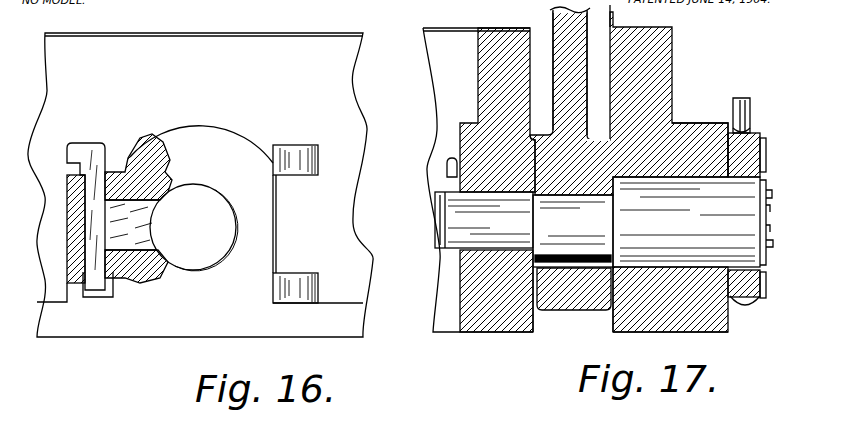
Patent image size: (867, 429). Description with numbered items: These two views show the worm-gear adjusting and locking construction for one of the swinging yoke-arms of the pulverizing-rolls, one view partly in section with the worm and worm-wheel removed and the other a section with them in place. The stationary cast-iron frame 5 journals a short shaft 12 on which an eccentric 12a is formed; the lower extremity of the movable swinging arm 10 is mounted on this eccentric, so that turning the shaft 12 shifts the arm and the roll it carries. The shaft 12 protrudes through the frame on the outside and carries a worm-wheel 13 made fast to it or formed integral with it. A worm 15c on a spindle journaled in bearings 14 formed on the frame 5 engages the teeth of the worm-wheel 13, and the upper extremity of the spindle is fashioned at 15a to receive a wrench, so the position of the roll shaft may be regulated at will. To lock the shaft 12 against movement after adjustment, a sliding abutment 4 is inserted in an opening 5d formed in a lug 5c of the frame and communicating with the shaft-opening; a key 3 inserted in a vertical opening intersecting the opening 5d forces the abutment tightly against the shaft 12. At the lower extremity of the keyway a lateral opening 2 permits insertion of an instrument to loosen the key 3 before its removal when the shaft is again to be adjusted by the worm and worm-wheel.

In FIG. 16, the lateral opening 2 is at (98, 297).
In FIG. 16, the key 3 is at (88, 143).
In FIG. 16, the sliding abutment 4 is at (142, 245).
In FIG. 16, the frame 5 is at (200, 185).
In FIG. 17, the frame 5 is at (672, 60).
In FIG. 16, the lug 5c is at (252, 240).
In FIG. 17, the lug 5c is at (703, 124).
In FIG. 16, the opening 5d is at (141, 140).
In FIG. 17, the swinging arm 10 is at (566, 312).
In FIG. 16, the short shaft 12 is at (194, 227).
In FIG. 17, the short shaft 12 is at (597, 222).
In FIG. 17, the eccentric 12a is at (573, 231).
In FIG. 17, the worm-wheel 13 is at (745, 300).
In FIG. 16, the bearing 14 is at (318, 292).
In FIG. 17, the bearing 14 is at (766, 290).
In FIG. 17, the wrench-receiving extremity 15a is at (751, 112).
In FIG. 17, the worm 15c is at (770, 199).